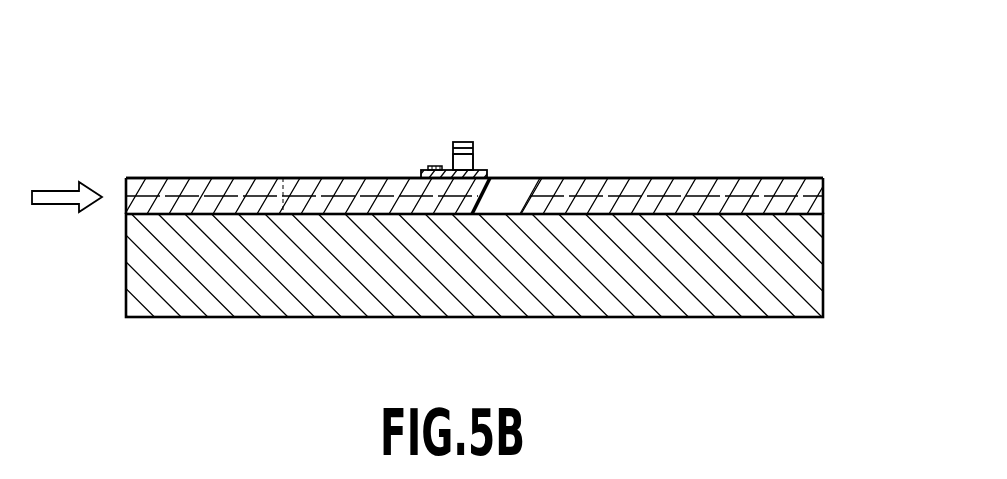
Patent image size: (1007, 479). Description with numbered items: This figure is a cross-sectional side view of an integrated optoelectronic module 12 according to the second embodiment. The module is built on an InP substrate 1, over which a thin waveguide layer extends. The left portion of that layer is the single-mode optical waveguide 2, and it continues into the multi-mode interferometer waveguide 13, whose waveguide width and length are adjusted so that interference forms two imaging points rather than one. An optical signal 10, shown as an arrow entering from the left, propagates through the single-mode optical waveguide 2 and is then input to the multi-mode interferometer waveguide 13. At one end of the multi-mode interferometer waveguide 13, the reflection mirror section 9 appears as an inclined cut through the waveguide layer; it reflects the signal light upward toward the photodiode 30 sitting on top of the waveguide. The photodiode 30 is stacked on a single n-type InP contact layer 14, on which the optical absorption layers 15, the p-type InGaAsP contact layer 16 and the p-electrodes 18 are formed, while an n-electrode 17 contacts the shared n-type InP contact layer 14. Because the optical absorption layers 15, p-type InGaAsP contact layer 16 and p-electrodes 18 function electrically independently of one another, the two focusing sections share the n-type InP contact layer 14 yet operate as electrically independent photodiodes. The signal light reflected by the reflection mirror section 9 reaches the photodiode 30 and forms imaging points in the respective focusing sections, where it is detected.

The InP substrate 1 is at (247, 312).
The single-mode optical waveguide 2 is at (283, 150).
The reflection mirror section 9 is at (540, 220).
The optical signal 10 is at (55, 182).
The integrated optoelectronic module 12 is at (690, 99).
The multi-mode interferometer waveguide 13 is at (308, 190).
The n-type InP contact layer 14 is at (420, 177).
The optical absorption layers 15 is at (470, 162).
The p-type InGaAsP contact layer 16 is at (474, 150).
The n-electrode 17 is at (433, 166).
The p-electrodes 18 is at (463, 142).
The photodiode 30 is at (484, 126).